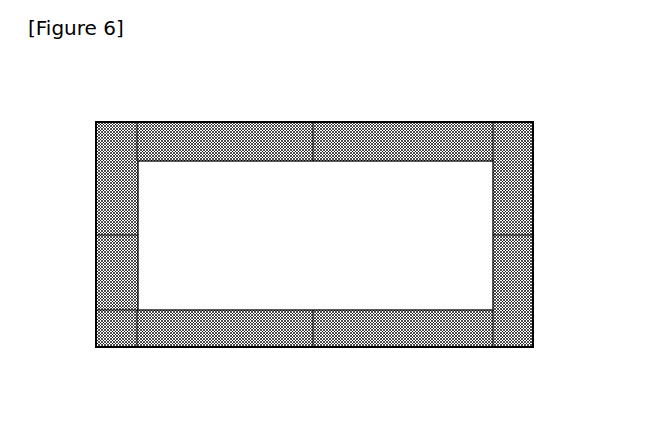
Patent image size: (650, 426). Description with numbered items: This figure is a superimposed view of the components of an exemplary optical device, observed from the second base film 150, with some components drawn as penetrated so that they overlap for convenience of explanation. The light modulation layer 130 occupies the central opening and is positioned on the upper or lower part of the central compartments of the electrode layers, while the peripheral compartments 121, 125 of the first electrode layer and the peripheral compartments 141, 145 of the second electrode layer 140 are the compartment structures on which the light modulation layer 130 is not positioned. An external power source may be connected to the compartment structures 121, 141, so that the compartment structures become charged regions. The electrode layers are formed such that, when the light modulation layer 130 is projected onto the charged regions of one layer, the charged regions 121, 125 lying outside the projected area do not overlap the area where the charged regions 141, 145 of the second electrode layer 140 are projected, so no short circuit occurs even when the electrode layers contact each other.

The second base film 150 is at (533, 160).
The peripheral compartment 125 is at (398, 121).
The peripheral compartment 145 is at (230, 121).
The peripheral compartment 121 is at (250, 348).
The peripheral compartment 141 is at (418, 348).
The light modulation layer 130 is at (155, 283).
The second electrode layer 140 is at (125, 328).